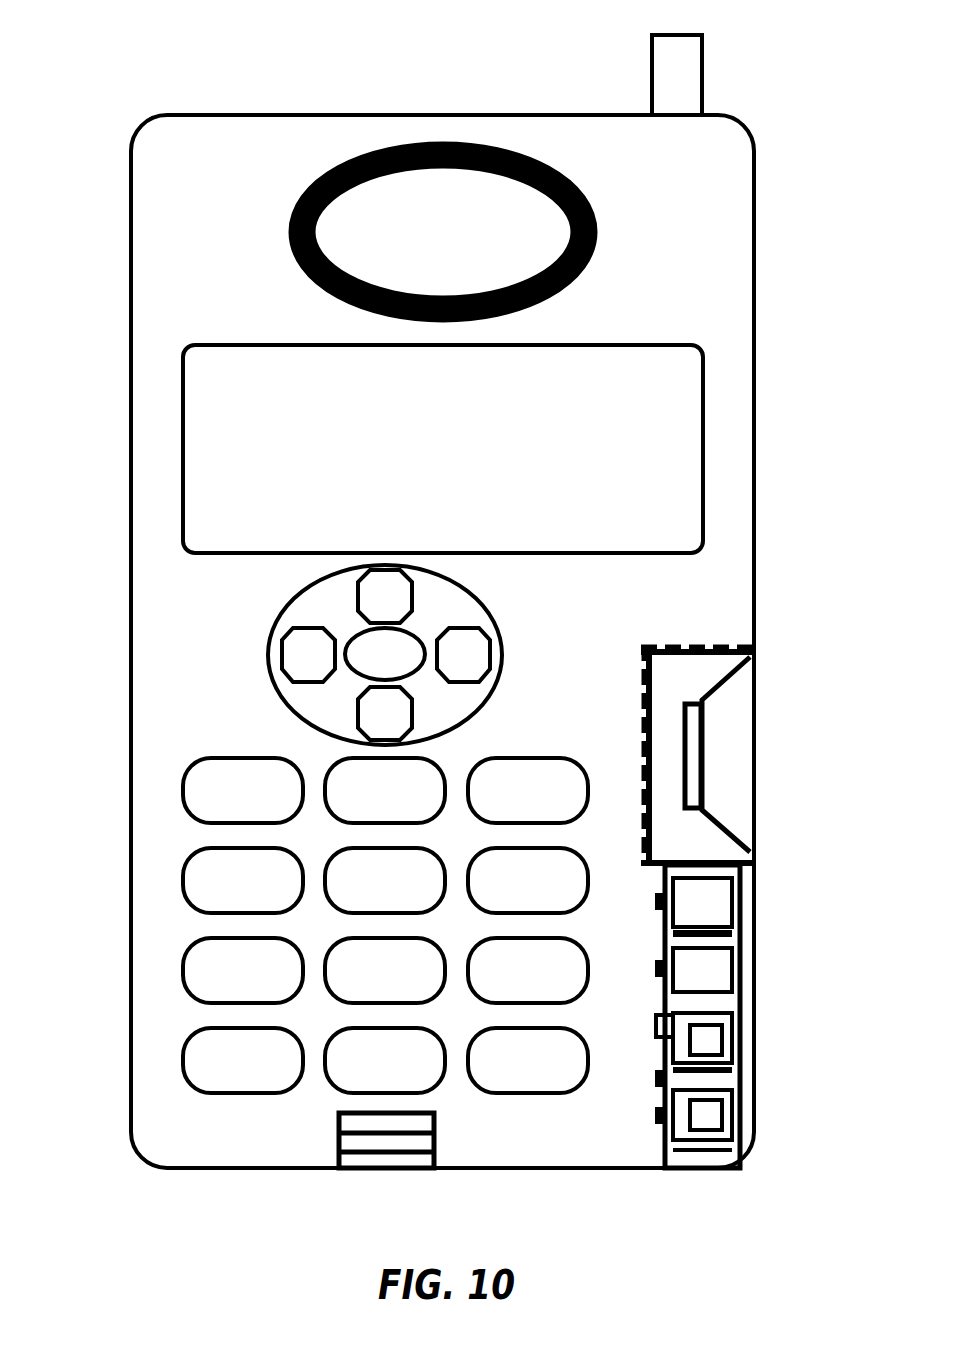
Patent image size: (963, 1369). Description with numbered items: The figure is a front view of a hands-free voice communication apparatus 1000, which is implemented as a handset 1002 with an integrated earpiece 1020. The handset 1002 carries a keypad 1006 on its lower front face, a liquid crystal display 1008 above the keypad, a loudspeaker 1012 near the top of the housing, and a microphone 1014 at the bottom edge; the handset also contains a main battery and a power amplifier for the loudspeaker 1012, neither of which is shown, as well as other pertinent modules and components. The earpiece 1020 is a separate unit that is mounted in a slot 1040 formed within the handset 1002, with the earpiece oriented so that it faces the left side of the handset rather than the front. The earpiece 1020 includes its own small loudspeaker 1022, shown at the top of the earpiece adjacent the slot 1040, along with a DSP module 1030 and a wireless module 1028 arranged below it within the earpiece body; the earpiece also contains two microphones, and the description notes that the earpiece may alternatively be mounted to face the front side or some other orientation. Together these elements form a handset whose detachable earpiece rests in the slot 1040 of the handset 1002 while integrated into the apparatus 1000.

The hands-free voice communication apparatus 1000 is at (110, 50).
The handset 1002 is at (435, 115).
The keypad 1006 is at (528, 757).
The liquid crystal display 1008 is at (642, 345).
The loudspeaker 1012 is at (599, 233).
The microphone 1014 is at (386, 1170).
The earpiece 1020 is at (705, 1170).
The small loudspeaker 1022 is at (756, 755).
The wireless module 1028 is at (742, 972).
The DSP module 1030 is at (742, 905).
The slot 1040 is at (641, 683).